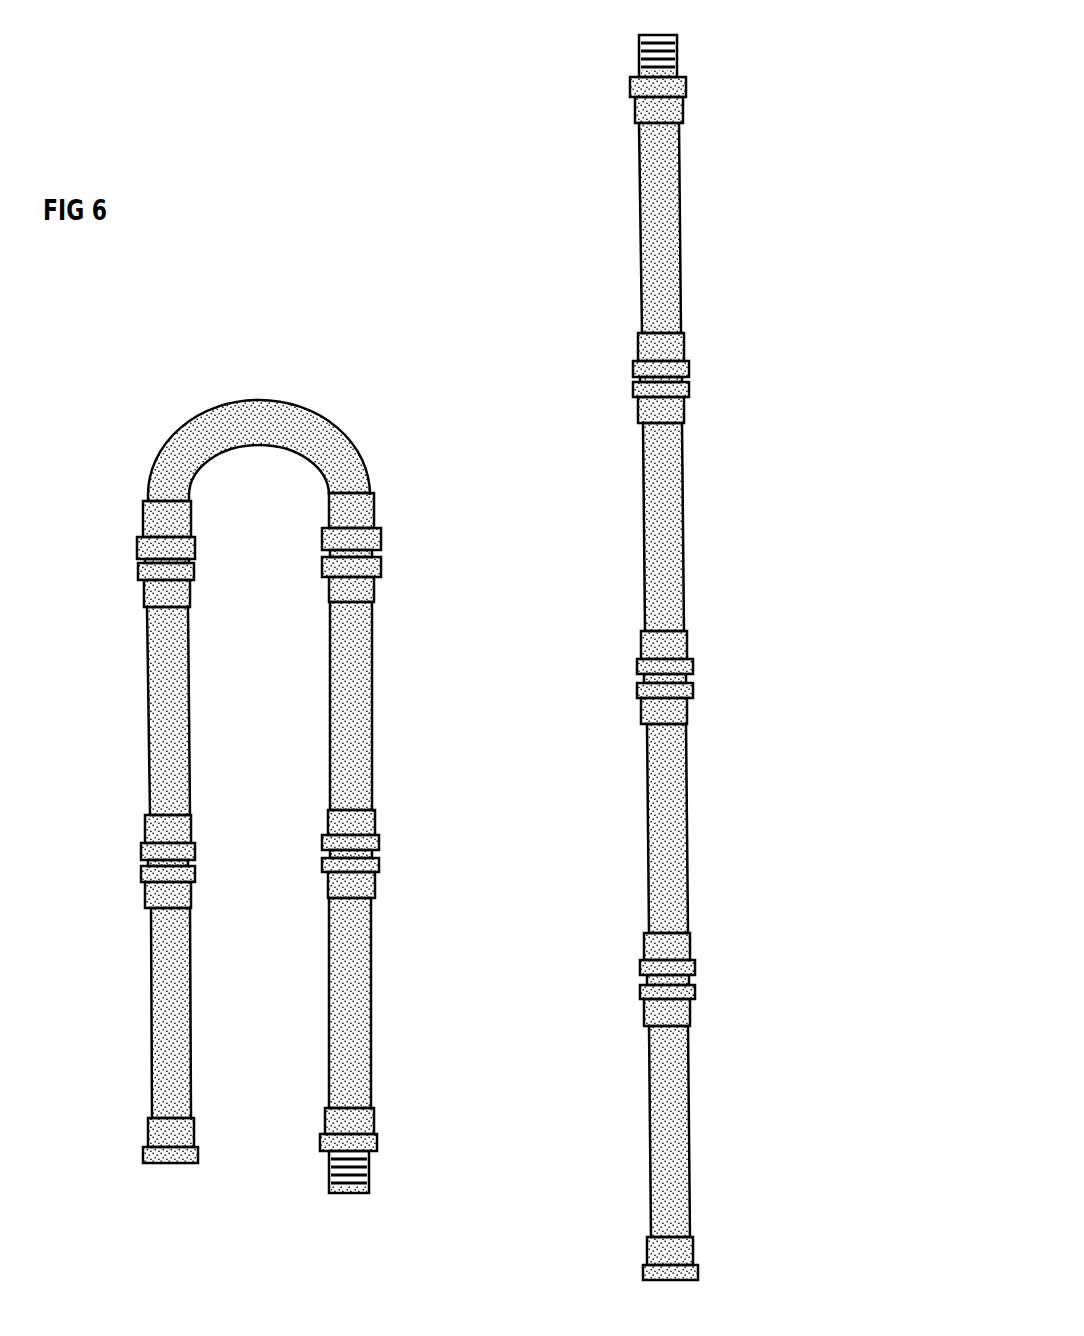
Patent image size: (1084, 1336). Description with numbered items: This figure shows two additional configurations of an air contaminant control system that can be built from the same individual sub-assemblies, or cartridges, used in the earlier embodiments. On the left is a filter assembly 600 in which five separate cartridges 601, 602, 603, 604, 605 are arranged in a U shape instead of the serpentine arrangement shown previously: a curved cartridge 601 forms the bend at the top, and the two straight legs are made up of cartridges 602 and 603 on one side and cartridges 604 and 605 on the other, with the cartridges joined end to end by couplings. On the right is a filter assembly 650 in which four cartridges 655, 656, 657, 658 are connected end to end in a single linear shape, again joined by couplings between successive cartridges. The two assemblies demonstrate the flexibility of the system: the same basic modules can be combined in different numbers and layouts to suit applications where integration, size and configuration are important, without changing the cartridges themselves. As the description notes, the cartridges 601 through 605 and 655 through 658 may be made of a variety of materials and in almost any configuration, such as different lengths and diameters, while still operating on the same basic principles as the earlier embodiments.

The filter assembly 600 is at (264, 382).
The cartridge 601 is at (146, 477).
The cartridge 602 is at (191, 724).
The cartridge 603 is at (198, 987).
The cartridge 604 is at (384, 705).
The cartridge 605 is at (383, 1007).
The filter assembly 650 is at (620, 201).
The cartridge 655 is at (685, 226).
The cartridge 656 is at (687, 570).
The cartridge 657 is at (689, 851).
The cartridge 658 is at (691, 1164).